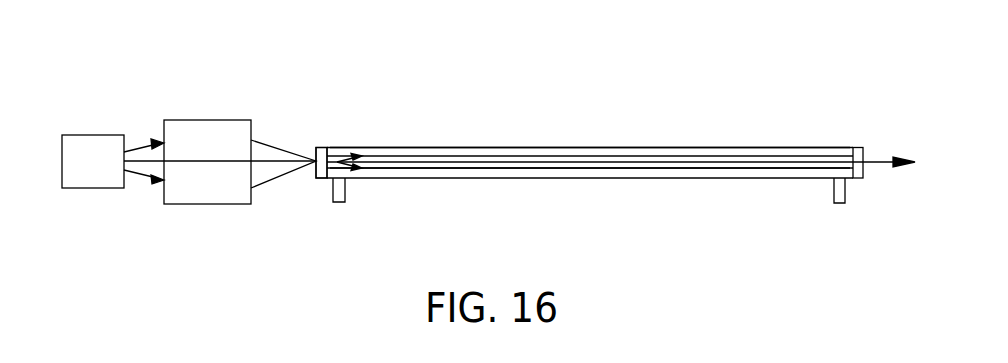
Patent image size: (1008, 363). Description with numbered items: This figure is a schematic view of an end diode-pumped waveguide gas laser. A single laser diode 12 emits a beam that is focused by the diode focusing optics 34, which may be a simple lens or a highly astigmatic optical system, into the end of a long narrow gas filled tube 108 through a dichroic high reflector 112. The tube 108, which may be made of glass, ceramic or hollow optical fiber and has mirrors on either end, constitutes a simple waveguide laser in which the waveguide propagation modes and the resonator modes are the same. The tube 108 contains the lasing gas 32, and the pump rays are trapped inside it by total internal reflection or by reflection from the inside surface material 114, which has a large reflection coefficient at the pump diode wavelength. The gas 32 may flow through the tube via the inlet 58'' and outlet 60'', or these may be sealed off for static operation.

The laser diode 12 is at (96, 188).
The diode focusing optics 34 is at (205, 120).
The lasing gas 32 is at (491, 160).
The gas filled tube 108 is at (683, 147).
The inside surface material 114 is at (612, 168).
The dichroic high reflector 112 is at (318, 178).
The inlet 58'' is at (355, 223).
The outlet 60'' is at (856, 224).